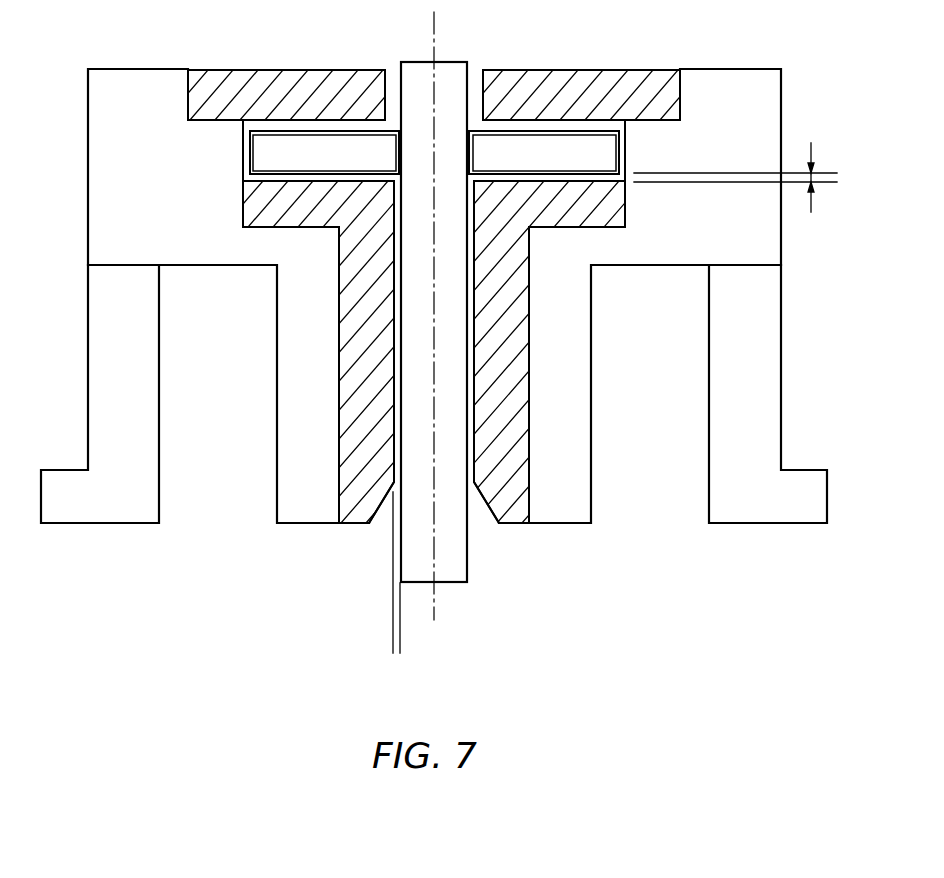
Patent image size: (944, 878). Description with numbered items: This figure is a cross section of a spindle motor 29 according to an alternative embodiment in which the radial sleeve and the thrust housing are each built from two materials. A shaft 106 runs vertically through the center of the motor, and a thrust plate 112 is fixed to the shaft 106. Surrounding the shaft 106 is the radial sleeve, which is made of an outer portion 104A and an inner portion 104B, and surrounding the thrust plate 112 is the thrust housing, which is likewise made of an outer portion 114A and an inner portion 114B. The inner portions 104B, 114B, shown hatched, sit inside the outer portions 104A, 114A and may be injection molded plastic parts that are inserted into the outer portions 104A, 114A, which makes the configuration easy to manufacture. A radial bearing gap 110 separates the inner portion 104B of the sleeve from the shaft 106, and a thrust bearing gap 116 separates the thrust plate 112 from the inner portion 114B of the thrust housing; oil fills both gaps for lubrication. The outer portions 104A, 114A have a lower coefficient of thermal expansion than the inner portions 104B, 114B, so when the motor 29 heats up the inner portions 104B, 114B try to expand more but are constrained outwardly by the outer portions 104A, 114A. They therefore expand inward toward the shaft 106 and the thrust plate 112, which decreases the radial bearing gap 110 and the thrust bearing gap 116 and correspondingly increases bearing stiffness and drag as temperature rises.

The motor 29 is at (876, 340).
The outer portion of radial sleeve 104A is at (431, 420).
The inner portion of radial sleeve 104B is at (401, 379).
The shaft 106 is at (479, 335).
The radial bearing gap 110 is at (357, 603).
The thrust plate 112 is at (456, 96).
The outer portion of thrust housing 114A is at (434, 137).
The inner portion of thrust housing 114B is at (459, 269).
The thrust bearing gap 116 is at (754, 168).